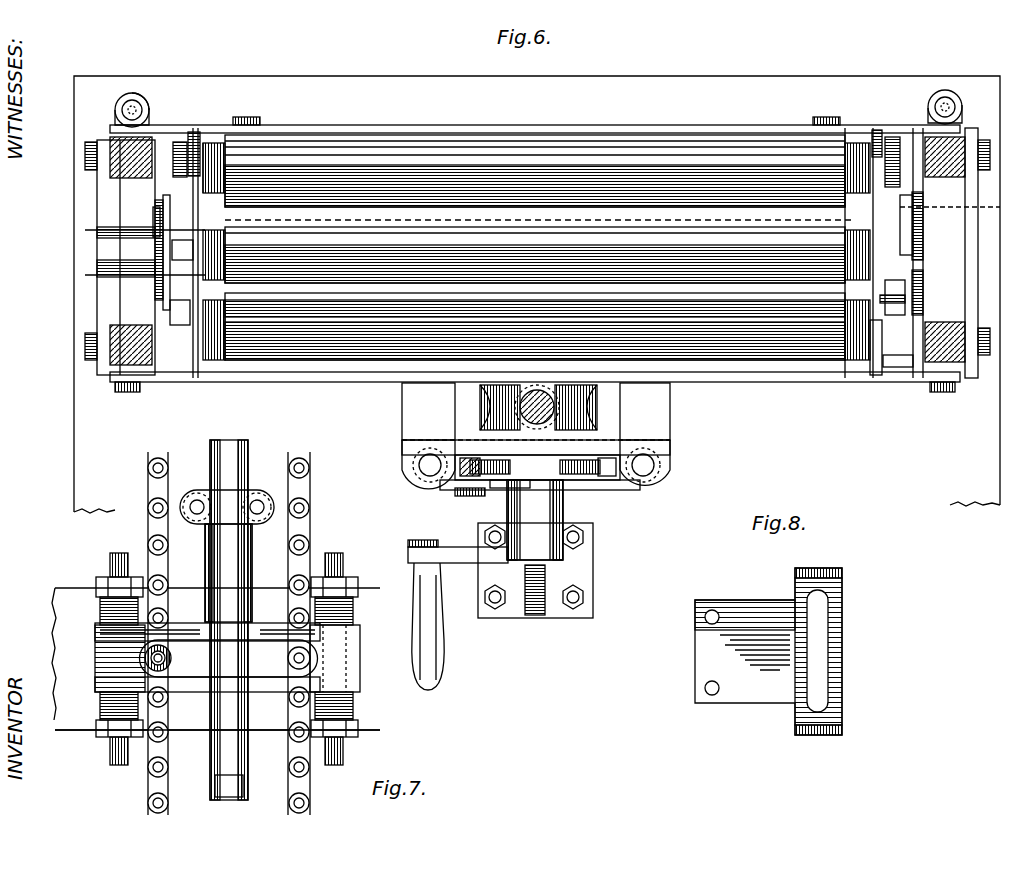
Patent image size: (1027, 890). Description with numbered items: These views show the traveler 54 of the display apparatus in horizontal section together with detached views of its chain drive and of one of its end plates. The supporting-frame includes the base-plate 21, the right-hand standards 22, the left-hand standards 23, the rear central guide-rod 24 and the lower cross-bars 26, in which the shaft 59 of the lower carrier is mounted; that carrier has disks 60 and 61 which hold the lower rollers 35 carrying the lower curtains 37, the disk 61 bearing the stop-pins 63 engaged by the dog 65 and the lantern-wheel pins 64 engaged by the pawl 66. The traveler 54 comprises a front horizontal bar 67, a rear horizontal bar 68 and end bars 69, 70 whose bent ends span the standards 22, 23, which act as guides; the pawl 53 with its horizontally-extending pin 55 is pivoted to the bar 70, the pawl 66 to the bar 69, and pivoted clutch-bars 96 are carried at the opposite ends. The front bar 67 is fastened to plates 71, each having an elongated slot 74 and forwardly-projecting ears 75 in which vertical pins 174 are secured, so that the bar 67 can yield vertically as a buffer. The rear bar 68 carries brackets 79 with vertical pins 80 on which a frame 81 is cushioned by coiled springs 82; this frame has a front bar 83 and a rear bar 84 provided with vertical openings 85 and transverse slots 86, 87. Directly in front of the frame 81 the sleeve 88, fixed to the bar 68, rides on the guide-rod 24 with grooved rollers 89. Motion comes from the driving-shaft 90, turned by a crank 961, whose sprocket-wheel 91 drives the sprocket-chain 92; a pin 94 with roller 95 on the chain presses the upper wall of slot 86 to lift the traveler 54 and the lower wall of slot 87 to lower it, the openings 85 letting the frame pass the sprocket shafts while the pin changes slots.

In FIG. 6, the base-plate 21 is at (408, 78).
In FIG. 6, the right-hand standards 22 is at (110, 160).
In FIG. 6, the left-hand standards 23 is at (965, 140).
In FIG. 6, the rear central guide-rod 24 is at (540, 395).
In FIG. 7, the rear central guide-rod 24 is at (232, 615).
In FIG. 6, the cross-bars 26 is at (97, 292).
In FIG. 6, the lower rollers 35 is at (218, 163).
In FIG. 6, the lower curtains 37 is at (290, 398).
In FIG. 6, the pawl 53 is at (166, 300).
In FIG. 7, the traveler 54 is at (216, 646).
In FIG. 6, the horizontally-extending pin 55 is at (178, 325).
In FIG. 6, the shaft 59 is at (97, 248).
In FIG. 6, the disk 60 is at (190, 370).
In FIG. 6, the disk 61 is at (885, 373).
In FIG. 6, the stop-pins 63 is at (962, 211).
In FIG. 6, the pins 64 is at (915, 222).
In FIG. 6, the dog 65 is at (905, 300).
In FIG. 6, the pawl 66 is at (900, 380).
In FIG. 6, the front horizontal bar 67 is at (612, 133).
In FIG. 6, the rear horizontal bar 68 is at (800, 382).
In FIG. 6, the end bar 69 is at (915, 198).
In FIG. 6, the end bar 70 is at (155, 204).
In FIG. 6, the plates 71 is at (198, 132).
In FIG. 8, the plates 71 is at (768, 651).
In FIG. 8, the elongated slots 74 is at (820, 682).
In FIG. 6, the ears 75 is at (115, 108).
In FIG. 8, the ears 75 is at (830, 568).
In FIG. 6, the brackets 79 is at (402, 405).
In FIG. 7, the brackets 79 is at (96, 606).
In FIG. 6, the vertical pins 80 is at (413, 464).
In FIG. 7, the vertical pins 80 is at (228, 646).
In FIG. 6, the frame 81 is at (556, 494).
In FIG. 7, the frame 81 is at (345, 684).
In FIG. 7, the coiled springs 82 is at (105, 612).
In FIG. 6, the front bar 83 is at (600, 445).
In FIG. 6, the rear bar 84 is at (590, 480).
In FIG. 6, the vertical openings 85 is at (505, 492).
In FIG. 7, the vertical openings 85 is at (262, 623).
In FIG. 7, the transverse slot 86 is at (229, 658).
In FIG. 7, the transverse slot 87 is at (284, 658).
In FIG. 7, the sleeve 88 is at (252, 548).
In FIG. 6, the grooved rollers 89 is at (480, 415).
In FIG. 7, the grooved rollers 89 is at (197, 493).
In FIG. 6, the driving-shaft 90 is at (545, 572).
In FIG. 6, the sprocket-wheel 91 is at (482, 458).
In FIG. 6, the sprocket-chain 92 is at (455, 492).
In FIG. 7, the sprocket-chain 92 is at (148, 780).
In FIG. 6, the pin 94 is at (495, 488).
In FIG. 7, the pin 94 is at (160, 645).
In FIG. 7, the roller 95 is at (95, 680).
In FIG. 6, the clutch-bars 96 is at (180, 142).
In FIG. 6, the vertical pins 174 is at (136, 95).
In FIG. 6, the crank 961 is at (444, 630).